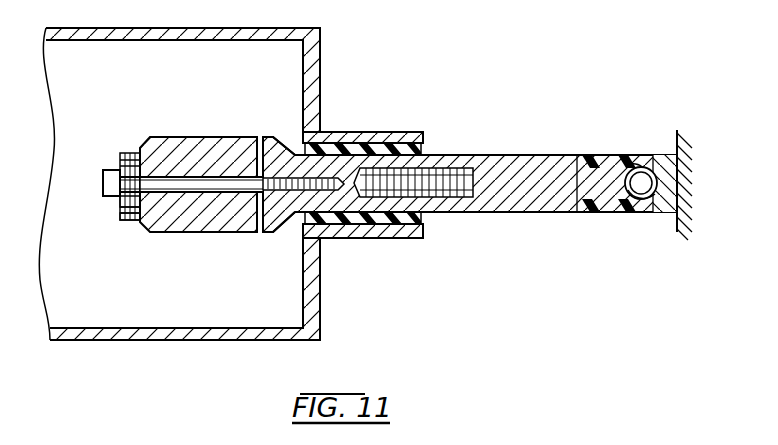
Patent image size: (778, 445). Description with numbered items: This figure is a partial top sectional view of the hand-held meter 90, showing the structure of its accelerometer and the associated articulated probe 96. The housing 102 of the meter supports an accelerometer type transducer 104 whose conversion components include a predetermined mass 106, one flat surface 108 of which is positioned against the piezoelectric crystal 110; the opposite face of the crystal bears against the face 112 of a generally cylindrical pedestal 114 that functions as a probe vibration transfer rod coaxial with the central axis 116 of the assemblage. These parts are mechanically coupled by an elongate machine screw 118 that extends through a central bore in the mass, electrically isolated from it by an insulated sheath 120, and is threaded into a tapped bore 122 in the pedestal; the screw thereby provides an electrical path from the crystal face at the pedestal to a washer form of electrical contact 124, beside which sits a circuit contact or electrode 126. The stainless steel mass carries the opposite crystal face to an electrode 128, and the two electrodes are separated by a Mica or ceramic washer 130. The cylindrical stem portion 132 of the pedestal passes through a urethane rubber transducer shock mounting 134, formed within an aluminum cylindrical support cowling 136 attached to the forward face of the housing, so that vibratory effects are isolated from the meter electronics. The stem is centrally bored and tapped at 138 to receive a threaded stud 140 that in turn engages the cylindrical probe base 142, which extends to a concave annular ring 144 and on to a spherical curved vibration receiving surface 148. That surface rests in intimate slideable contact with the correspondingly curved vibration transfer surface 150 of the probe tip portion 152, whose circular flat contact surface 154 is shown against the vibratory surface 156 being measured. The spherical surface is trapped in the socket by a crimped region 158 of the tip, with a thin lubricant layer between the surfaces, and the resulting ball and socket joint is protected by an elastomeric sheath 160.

The hand-held meter 90 is at (341, 318).
The articulated probe 96 is at (541, 141).
The housing 102 is at (320, 51).
The accelerometer type transducer 104 is at (173, 130).
The predetermined mass 106 is at (180, 220).
The flat surface of mass 108 is at (260, 233).
The piezoelectric crystal 110 is at (258, 143).
The pedestal face 112 is at (263, 139).
The pedestal 114 is at (401, 156).
The central axis 116 is at (503, 214).
The elongate machine screw 118 is at (105, 182).
The insulated sheath 120 is at (197, 183).
The tapped bore 122 is at (292, 229).
The washer form of electrical contact 124 is at (122, 206).
The circuit contact or electrode 126 is at (125, 219).
The electrode 128 is at (133, 226).
The Mica or ceramic washer 130 is at (137, 156).
The cylindrical stem portion 132 is at (347, 240).
The transducer shock mounting 134 is at (417, 148).
The cylindrical support cowling 136 is at (353, 131).
The tapped bore of stem 138 is at (403, 239).
The threaded stud 140 is at (446, 200).
The probe base 142 is at (520, 196).
The concave annular ring 144 is at (588, 154).
The curved vibration receiving surface 148 is at (650, 157).
The curved vibration transfer surface 150 is at (650, 204).
The probe tip portion 152 is at (679, 140).
The circular flat contact surface 154 is at (679, 166).
The vibratory surface 156 is at (687, 205).
The crimped region and lubricant layer 158 is at (633, 157).
The elastomeric sheath 160 is at (627, 154).